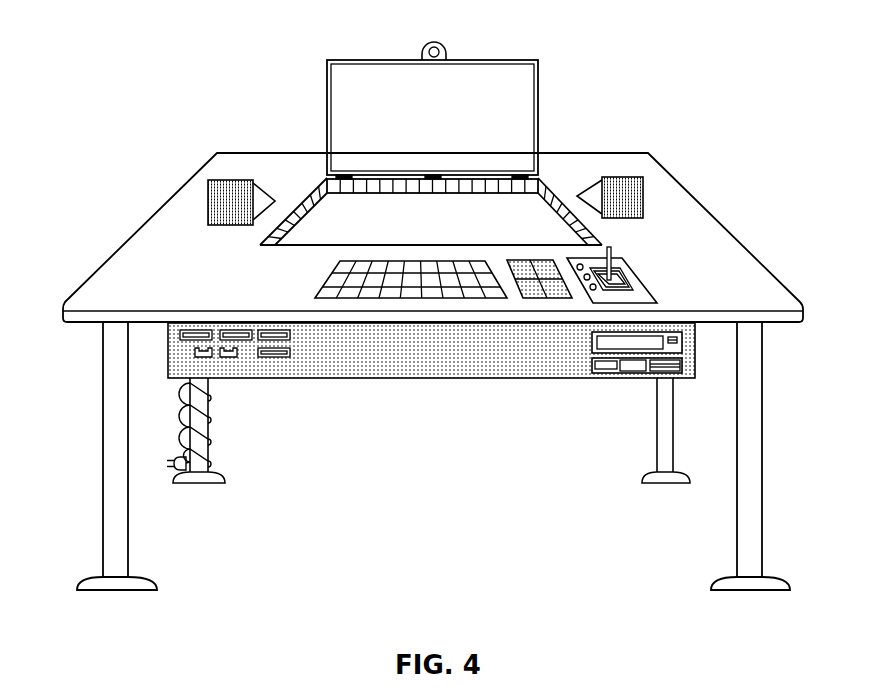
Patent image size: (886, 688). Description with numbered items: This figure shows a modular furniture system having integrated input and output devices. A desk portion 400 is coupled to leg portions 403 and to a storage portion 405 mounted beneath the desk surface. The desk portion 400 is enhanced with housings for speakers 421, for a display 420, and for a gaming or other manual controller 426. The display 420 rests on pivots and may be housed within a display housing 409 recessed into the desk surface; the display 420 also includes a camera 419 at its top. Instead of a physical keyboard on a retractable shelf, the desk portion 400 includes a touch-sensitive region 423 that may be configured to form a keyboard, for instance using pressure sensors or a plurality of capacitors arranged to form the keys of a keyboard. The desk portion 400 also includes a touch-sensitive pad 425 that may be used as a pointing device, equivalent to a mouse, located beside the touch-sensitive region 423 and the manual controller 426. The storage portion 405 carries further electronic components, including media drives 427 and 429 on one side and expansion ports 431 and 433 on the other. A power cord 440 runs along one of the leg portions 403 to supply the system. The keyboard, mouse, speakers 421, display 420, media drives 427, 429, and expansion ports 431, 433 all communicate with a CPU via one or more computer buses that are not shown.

The desk portion 400 is at (433, 316).
The leg portions 403 is at (400, 456).
The storage portion 405 is at (431, 390).
The display housing 409 is at (457, 174).
The camera 419 is at (389, 39).
The display 420 is at (387, 108).
The speakers 421 is at (497, 164).
The touch-sensitive region 423 is at (271, 257).
The touch-sensitive pad 425 is at (576, 344).
The manual controller 426 is at (671, 242).
The media drive 427 is at (723, 340).
The media drive 429 is at (720, 389).
The expansion port 431 is at (273, 387).
The expansion port 433 is at (266, 410).
The power cable and plug 440 is at (116, 426).